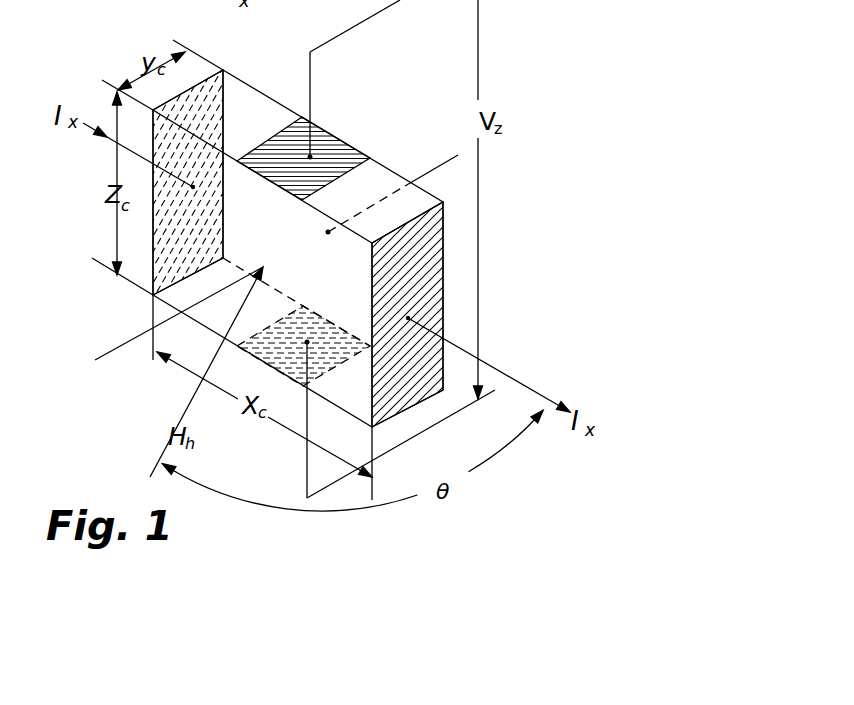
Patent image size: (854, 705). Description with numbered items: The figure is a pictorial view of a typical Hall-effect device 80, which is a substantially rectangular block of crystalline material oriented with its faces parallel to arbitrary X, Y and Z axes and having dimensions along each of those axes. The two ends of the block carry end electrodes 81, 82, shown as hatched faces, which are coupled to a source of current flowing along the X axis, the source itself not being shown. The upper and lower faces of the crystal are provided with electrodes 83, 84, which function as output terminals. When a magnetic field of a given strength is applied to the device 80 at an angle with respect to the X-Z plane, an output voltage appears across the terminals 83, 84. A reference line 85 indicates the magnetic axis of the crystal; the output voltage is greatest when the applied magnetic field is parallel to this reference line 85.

The Hall-effect device 80 is at (276, 75).
The end electrode 81 is at (430, 263).
The end electrode 82 is at (152, 254).
The upper face electrode 83 is at (343, 138).
The lower face electrode 84 is at (259, 363).
The reference line 85 is at (98, 361).